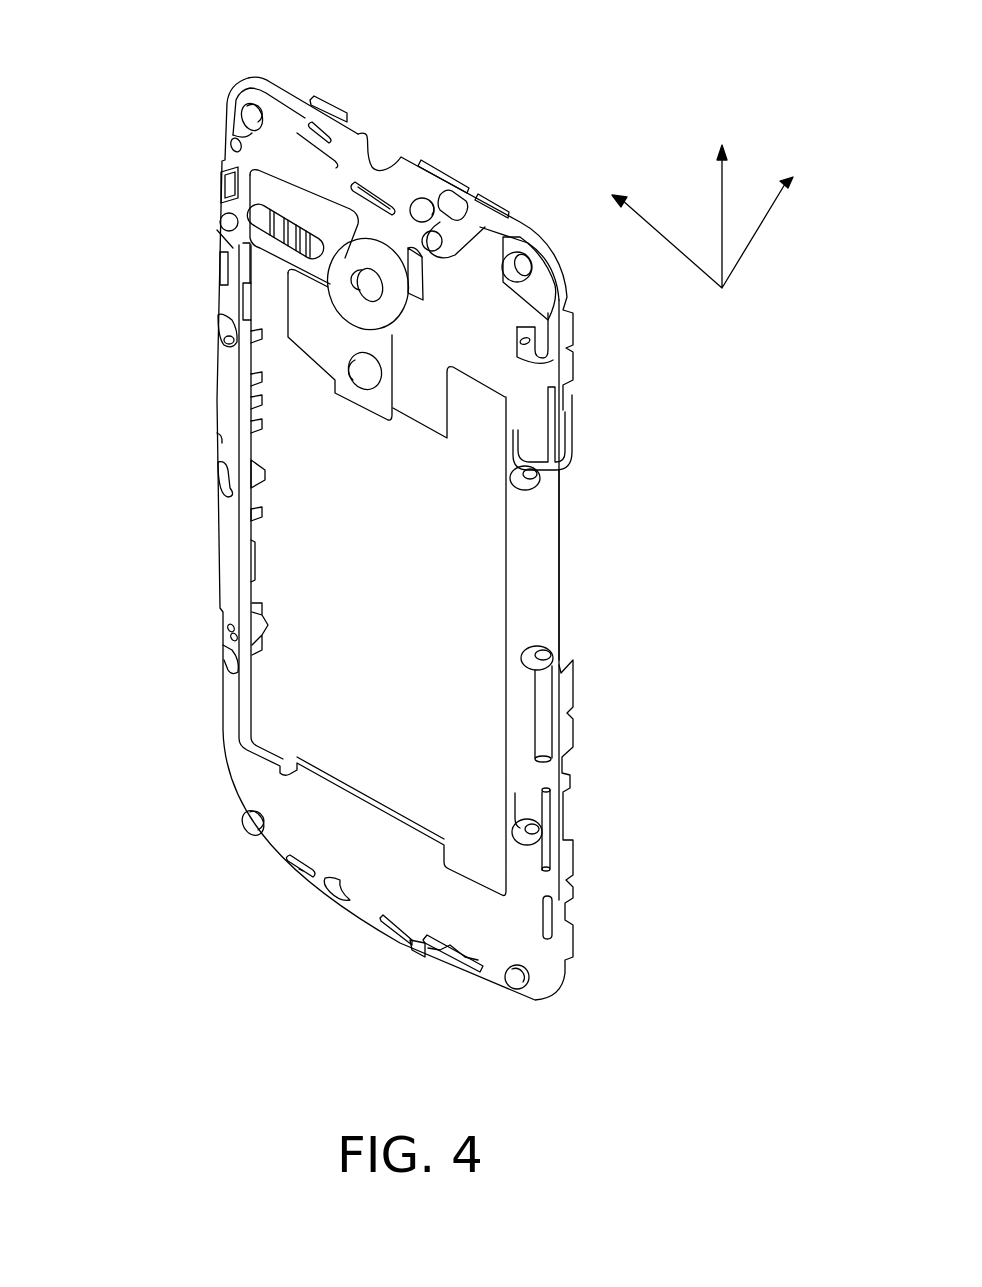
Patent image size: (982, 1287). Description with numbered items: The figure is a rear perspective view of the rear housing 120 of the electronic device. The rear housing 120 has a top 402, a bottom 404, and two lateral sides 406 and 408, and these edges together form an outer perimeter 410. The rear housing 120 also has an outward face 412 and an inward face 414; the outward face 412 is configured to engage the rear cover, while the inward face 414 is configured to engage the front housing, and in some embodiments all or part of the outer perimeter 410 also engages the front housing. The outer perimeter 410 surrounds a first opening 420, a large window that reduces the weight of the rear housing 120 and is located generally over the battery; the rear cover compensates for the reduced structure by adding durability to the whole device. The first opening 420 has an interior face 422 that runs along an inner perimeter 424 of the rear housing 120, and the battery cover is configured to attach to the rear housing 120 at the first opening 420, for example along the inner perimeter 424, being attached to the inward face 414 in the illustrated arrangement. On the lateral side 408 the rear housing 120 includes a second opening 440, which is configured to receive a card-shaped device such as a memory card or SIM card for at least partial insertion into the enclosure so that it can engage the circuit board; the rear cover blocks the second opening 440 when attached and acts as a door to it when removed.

The top 402 is at (395, 538).
The rear housing 120 is at (660, 73).
The lateral side 406 is at (168, 358).
The inner perimeter 424 is at (272, 448).
The interior face 422 is at (248, 518).
The first opening 420 is at (310, 578).
The second opening 440 is at (586, 420).
The lateral side 408 is at (593, 601).
The outer perimeter 410 is at (597, 694).
The inward face 414 is at (628, 872).
The bottom 404 is at (292, 921).
The outward face 412 is at (468, 912).